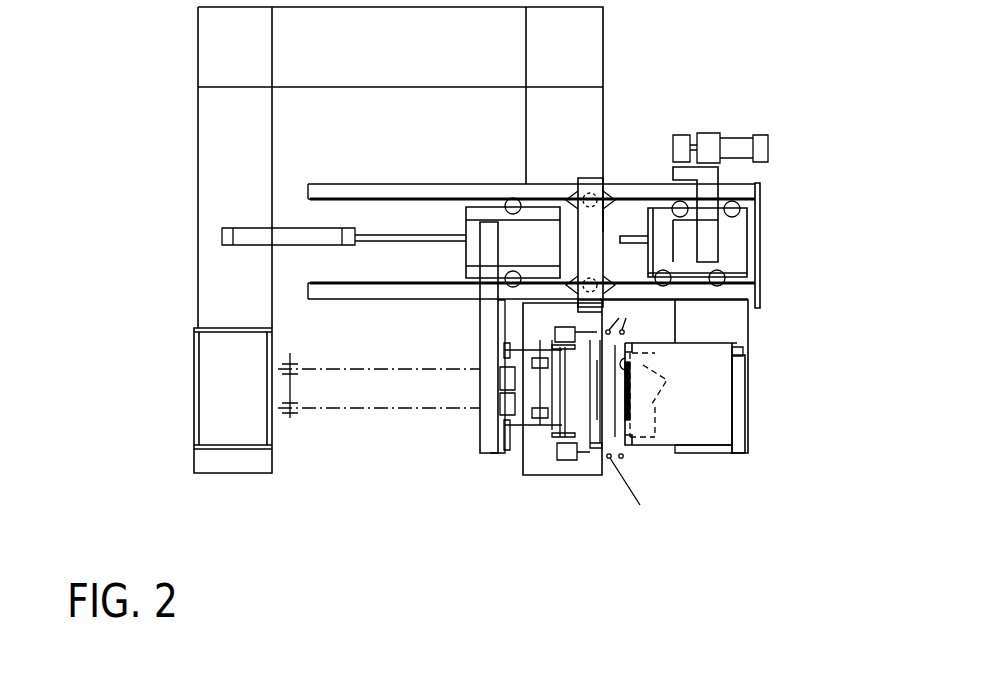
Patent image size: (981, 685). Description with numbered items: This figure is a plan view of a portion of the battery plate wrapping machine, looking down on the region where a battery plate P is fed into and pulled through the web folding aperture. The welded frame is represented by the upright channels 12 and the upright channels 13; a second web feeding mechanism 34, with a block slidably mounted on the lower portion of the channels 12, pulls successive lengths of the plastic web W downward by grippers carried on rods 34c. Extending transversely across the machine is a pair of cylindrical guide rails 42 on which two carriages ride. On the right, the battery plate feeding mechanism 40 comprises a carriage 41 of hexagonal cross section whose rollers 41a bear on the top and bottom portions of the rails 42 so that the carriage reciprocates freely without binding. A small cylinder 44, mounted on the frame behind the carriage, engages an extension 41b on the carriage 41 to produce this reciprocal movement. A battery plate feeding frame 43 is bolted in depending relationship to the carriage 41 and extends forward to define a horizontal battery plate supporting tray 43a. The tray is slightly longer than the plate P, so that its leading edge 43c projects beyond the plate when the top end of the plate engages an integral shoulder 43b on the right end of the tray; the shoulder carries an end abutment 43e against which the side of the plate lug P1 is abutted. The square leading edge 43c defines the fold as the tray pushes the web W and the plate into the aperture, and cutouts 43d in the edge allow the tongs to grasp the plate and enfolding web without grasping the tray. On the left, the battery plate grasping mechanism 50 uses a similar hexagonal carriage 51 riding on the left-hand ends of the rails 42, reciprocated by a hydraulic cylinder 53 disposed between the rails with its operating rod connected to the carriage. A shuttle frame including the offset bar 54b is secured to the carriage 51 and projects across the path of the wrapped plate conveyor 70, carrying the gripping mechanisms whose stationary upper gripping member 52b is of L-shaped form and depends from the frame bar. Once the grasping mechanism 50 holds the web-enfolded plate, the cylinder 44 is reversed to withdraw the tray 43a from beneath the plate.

The upright channels 12 is at (597, 43).
The upright channels 13 is at (207, 52).
The cylindrical guide rails 42 is at (308, 184).
The hydraulic cylinder 53 is at (235, 228).
The carriage 51 is at (468, 258).
The battery plate grasping mechanism 50 is at (468, 311).
The bar 54b is at (487, 424).
The second web feeding mechanism 34 is at (620, 222).
The cylinder 44 is at (737, 135).
The extension 41b is at (710, 182).
The carriage 41 is at (747, 263).
The rollers 41a is at (720, 277).
The battery plate feeding mechanism 40 is at (750, 309).
The battery plate feeding frame 43 is at (766, 414).
The battery plate supporting tray 43a is at (705, 455).
The shoulder 43b is at (745, 452).
The leading edge 43c is at (621, 362).
The cutouts 43d is at (670, 395).
The end abutment 43e is at (742, 356).
The battery plate P is at (694, 410).
The plate lug P1 is at (743, 348).
The rods 34c is at (644, 417).
The web W is at (622, 458).
The stationary upper gripping member 52b is at (548, 362).
The wrapped plate conveyor 70 is at (372, 410).